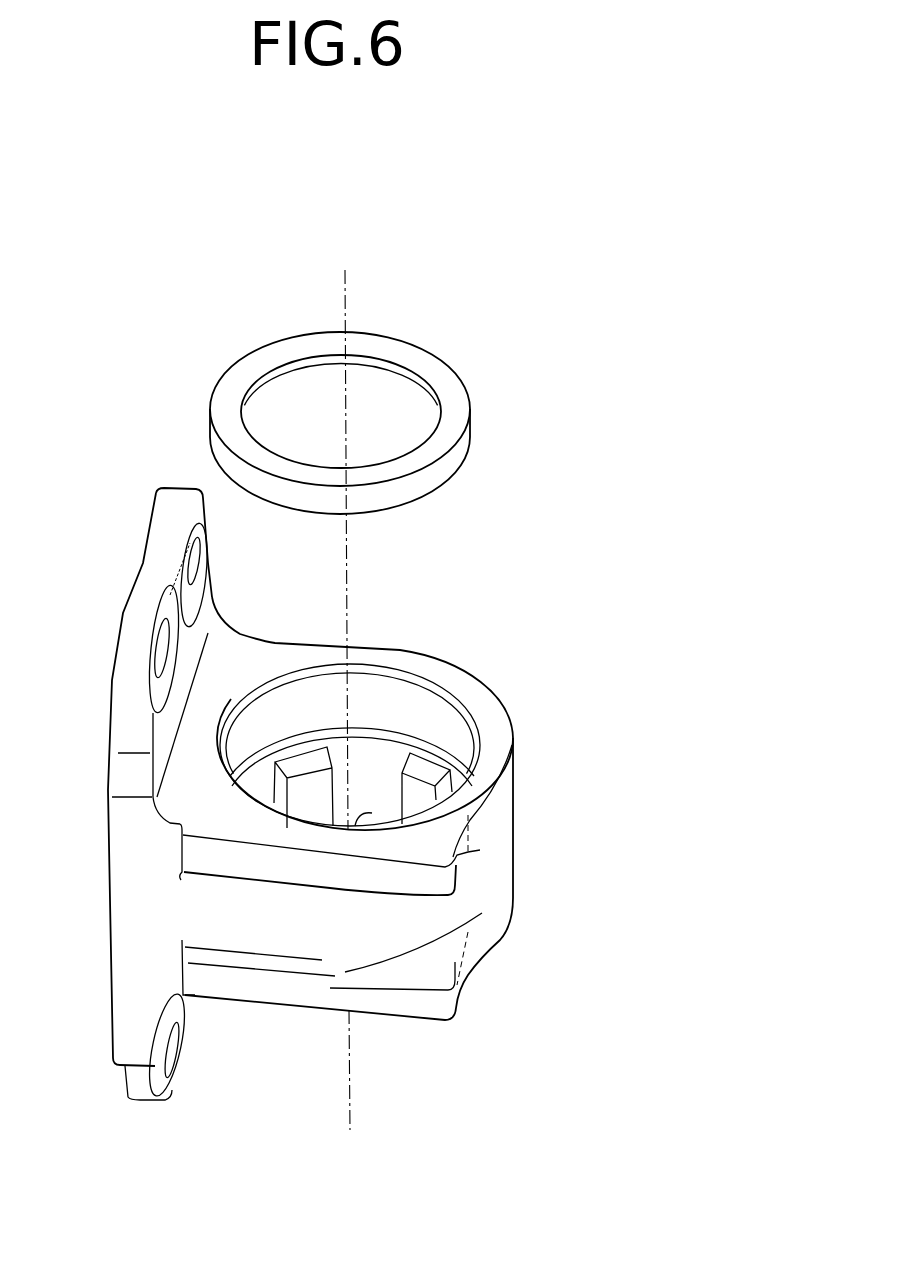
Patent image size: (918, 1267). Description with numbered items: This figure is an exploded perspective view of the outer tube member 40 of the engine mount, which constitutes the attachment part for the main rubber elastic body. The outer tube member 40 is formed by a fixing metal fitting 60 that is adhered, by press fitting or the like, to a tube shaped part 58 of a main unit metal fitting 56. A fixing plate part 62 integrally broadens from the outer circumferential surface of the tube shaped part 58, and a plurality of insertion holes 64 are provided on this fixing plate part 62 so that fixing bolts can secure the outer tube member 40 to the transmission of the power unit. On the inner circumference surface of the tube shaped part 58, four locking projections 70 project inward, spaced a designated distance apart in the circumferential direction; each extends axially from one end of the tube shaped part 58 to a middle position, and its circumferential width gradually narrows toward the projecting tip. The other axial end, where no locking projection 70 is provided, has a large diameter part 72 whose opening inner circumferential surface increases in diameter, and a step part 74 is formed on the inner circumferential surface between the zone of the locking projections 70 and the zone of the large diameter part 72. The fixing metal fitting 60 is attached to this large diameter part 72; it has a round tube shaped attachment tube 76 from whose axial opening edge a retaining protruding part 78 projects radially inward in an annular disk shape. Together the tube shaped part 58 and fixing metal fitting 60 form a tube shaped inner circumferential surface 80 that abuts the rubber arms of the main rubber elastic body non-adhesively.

The outer tube member 40 is at (540, 284).
The main unit metal fitting 56 is at (498, 873).
The tube shaped part 58 is at (440, 661).
The fixing metal fitting 60 is at (400, 331).
The fixing plate part 62 is at (133, 913).
The insertion holes 64 is at (197, 562).
The locking projections 70 is at (302, 763).
The large diameter part 72 is at (372, 813).
The step part 74 is at (388, 733).
The attachment tube 76 is at (452, 468).
The retaining protruding part 78 is at (445, 432).
The tube shaped inner circumferential surface 80 is at (365, 773).